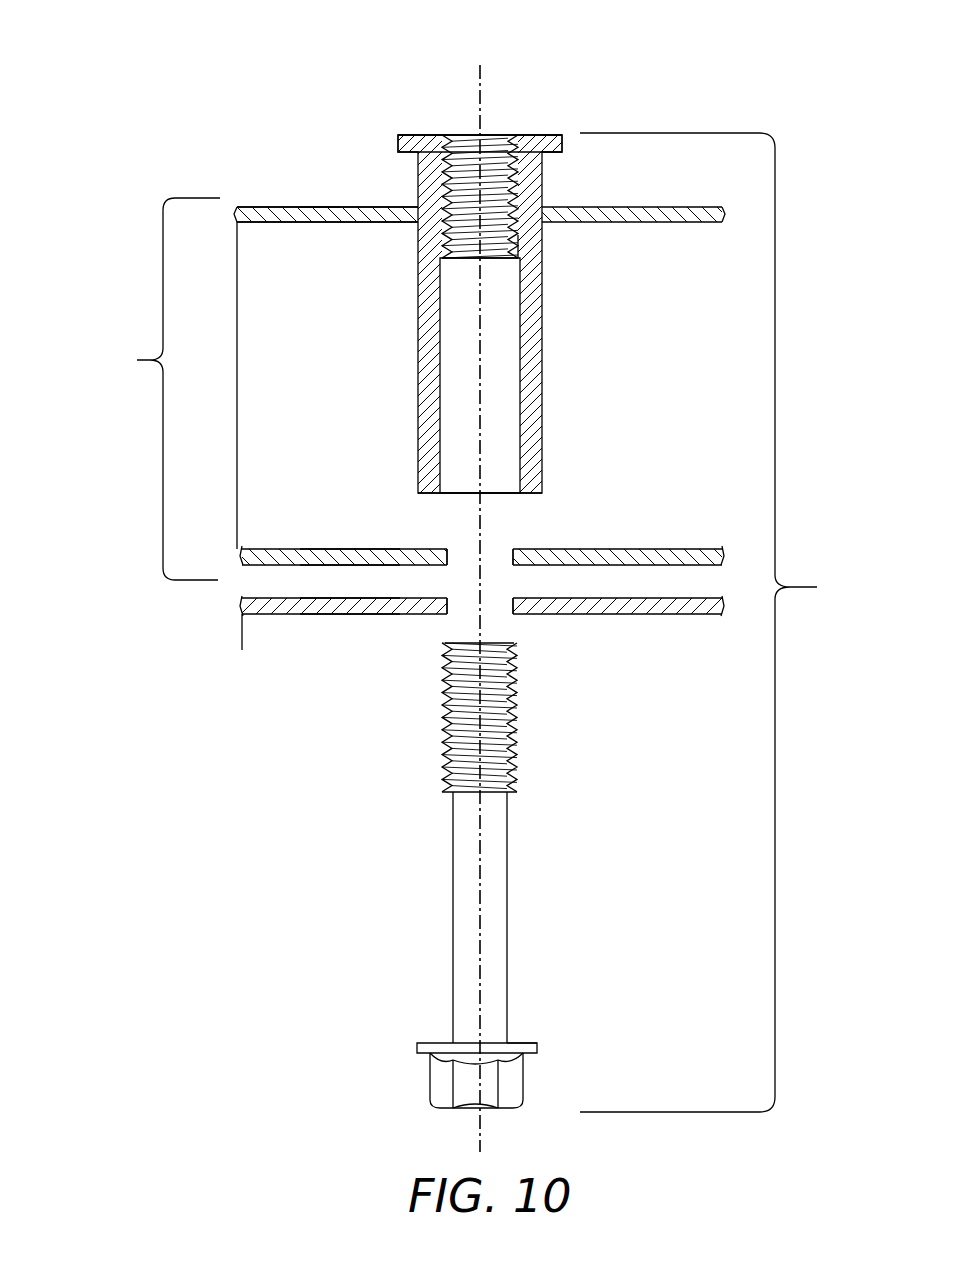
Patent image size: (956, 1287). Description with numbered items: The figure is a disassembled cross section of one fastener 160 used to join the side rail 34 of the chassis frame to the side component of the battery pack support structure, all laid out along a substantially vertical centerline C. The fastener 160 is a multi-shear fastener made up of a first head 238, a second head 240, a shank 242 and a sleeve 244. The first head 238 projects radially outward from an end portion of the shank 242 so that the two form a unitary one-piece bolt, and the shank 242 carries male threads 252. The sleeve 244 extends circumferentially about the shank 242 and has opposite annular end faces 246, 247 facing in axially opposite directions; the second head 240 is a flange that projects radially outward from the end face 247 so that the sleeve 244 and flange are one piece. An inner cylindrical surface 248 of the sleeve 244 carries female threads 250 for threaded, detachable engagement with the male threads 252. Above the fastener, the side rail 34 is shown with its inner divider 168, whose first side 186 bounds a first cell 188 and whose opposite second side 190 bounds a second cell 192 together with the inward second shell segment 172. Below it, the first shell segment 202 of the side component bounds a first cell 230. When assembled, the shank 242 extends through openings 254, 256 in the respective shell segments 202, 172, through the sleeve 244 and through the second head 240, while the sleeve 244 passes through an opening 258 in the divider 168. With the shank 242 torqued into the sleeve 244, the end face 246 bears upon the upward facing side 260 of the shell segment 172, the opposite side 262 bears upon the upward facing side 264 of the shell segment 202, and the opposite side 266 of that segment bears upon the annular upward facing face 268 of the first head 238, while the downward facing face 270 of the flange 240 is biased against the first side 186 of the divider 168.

The vertical centerline C is at (478, 104).
The side rail 34 is at (137, 360).
The fastener 160 is at (817, 587).
The inner divider 168 is at (268, 226).
The second shell segment 172 is at (268, 547).
The first side of the divider 186 is at (272, 205).
The first cell 188 is at (327, 189).
The second side of the divider 190 is at (322, 225).
The second cell 192 is at (302, 385).
The first shell segment 202 is at (680, 616).
The first cell 230 is at (305, 687).
The first head 238 is at (540, 1048).
The second head 240 is at (565, 150).
The shank 242 is at (545, 875).
The sleeve 244 is at (545, 395).
The end face 246 is at (528, 500).
The end face 247 is at (528, 145).
The inner cylindrical surface 248 is at (500, 335).
The female threads 250 is at (494, 160).
The male threads 252 is at (516, 690).
The opening 254 is at (494, 606).
The opening 256 is at (494, 567).
The opening 258 is at (530, 233).
The upward facing side 260 is at (350, 548).
The opposite side 262 is at (330, 562).
The upward facing side 264 is at (390, 600).
The opposite side 266 is at (390, 617).
The upward facing face 268 is at (517, 1043).
The downward facing face 270 is at (548, 154).